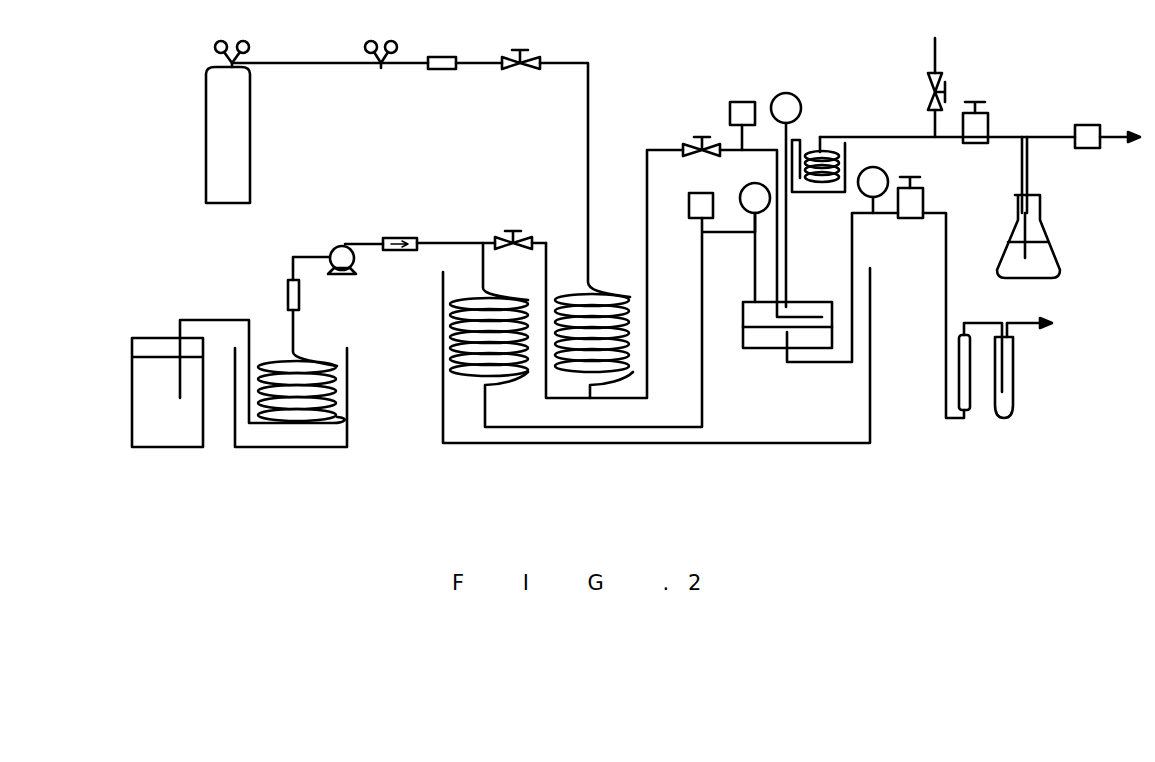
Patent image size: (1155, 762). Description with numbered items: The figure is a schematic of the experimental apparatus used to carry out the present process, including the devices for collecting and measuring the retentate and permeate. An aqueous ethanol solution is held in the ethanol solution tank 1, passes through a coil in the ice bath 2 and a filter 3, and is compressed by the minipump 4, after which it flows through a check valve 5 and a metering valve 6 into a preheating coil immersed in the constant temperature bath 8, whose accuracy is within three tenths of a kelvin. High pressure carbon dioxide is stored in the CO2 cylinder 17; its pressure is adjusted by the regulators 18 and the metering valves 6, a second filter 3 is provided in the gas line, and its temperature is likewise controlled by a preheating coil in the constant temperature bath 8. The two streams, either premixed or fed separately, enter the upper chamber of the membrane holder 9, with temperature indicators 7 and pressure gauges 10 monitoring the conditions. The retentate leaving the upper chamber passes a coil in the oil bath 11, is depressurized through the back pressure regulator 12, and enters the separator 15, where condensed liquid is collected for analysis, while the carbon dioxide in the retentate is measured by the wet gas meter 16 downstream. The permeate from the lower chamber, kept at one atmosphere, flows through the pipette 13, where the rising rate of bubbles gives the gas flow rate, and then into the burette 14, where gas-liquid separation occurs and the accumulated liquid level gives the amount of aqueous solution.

The ethanol solution tank 1 is at (167, 392).
The ice bath 2 is at (300, 397).
The filter 3 is at (364, 171).
The minipump 4 is at (342, 247).
The check valve 5 is at (400, 232).
The metering valve 6 is at (729, 137).
The temperature indicator 7 is at (710, 146).
The constant temperature bath 8 is at (656, 355).
The membrane holder 9 is at (787, 315).
The pressure gauge 10 is at (817, 151).
The oil bath 11 is at (818, 177).
The back pressure regulator 12 is at (953, 149).
The pipette 13 is at (970, 389).
The burette 14 is at (1015, 390).
The separator 15 is at (1032, 236).
The wet gas meter 16 is at (1086, 124).
The CO2 cylinder 17 is at (228, 133).
The regulator 18 is at (307, 41).